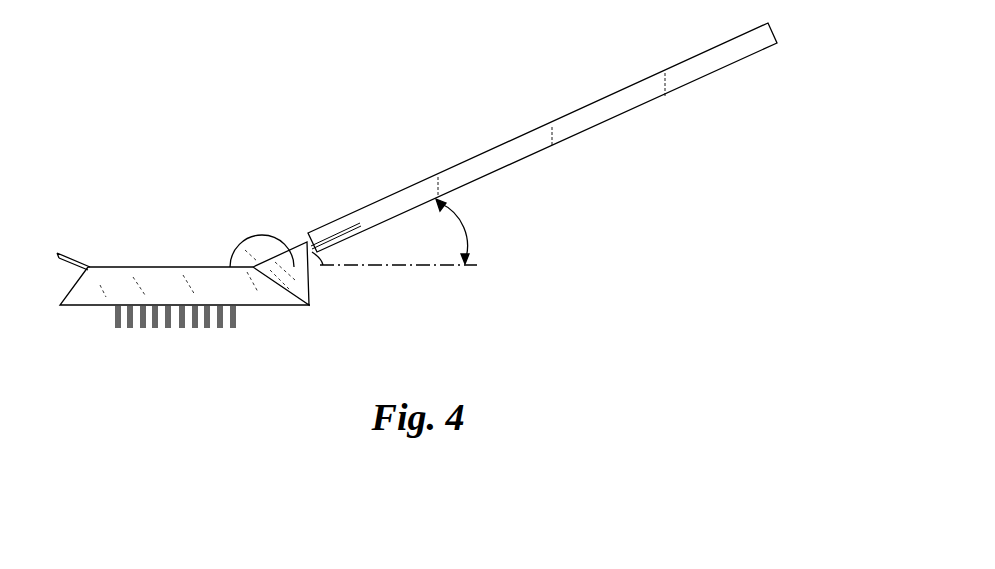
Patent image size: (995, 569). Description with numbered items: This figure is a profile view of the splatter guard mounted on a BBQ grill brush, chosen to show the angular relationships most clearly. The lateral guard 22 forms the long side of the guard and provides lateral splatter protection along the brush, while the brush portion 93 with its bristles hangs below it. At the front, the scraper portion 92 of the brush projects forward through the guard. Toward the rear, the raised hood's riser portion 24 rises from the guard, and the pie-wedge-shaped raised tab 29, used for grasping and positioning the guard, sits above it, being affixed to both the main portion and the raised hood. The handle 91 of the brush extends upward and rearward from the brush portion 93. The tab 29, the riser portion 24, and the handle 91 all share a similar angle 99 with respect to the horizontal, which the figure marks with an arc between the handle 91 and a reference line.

The lateral guard 22 is at (183, 298).
The riser portion 24 is at (312, 293).
The raised tab 29 is at (263, 235).
The handle 91 is at (552, 147).
The scraper portion 92 is at (88, 266).
The brush portion 93 is at (213, 332).
The angle 99 is at (462, 230).